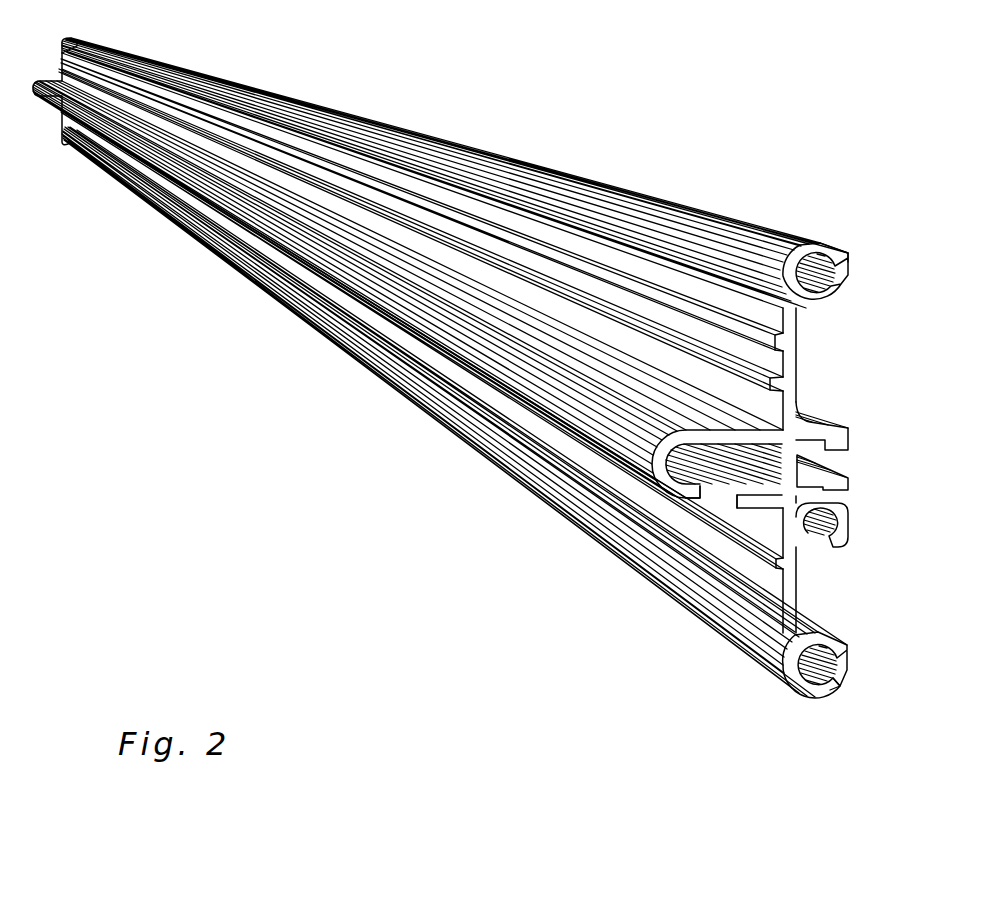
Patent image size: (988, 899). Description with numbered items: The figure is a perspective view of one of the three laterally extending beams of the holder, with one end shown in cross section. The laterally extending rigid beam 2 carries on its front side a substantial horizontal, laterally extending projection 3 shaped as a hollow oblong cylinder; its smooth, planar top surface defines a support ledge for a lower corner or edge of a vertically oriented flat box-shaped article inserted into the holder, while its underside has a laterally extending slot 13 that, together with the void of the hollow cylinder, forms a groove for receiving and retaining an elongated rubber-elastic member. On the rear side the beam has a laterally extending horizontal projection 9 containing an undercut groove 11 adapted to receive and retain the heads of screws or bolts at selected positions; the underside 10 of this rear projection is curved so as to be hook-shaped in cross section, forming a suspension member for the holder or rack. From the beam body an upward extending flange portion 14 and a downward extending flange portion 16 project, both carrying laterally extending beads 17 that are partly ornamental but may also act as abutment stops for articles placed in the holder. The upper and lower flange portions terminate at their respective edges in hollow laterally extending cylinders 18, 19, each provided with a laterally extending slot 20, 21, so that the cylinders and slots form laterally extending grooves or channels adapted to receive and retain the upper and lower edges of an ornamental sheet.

The laterally extending rigid beam 2 is at (399, 89).
The front side projection 3 is at (655, 466).
The rear side projection 9 is at (825, 420).
The underside of the rear projection 10 is at (838, 513).
The undercut groove 11 is at (830, 462).
The slot 13 is at (712, 500).
The upward extending flange portion 14 is at (787, 352).
The downward extending flange portion 16 is at (787, 578).
The laterally extending beads 17 is at (765, 384).
The hollow laterally extending cylinder 18 is at (840, 284).
The hollow laterally extending cylinder 19 is at (840, 646).
The laterally extending slot 20 is at (825, 257).
The laterally extending slot 21 is at (823, 684).